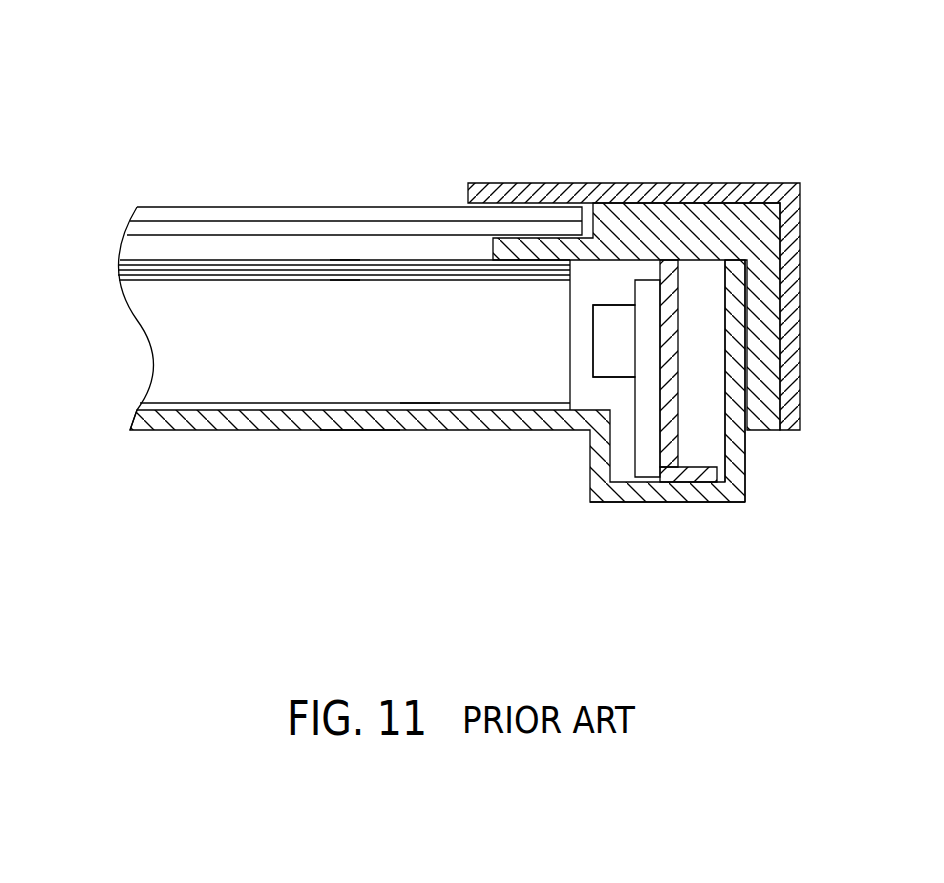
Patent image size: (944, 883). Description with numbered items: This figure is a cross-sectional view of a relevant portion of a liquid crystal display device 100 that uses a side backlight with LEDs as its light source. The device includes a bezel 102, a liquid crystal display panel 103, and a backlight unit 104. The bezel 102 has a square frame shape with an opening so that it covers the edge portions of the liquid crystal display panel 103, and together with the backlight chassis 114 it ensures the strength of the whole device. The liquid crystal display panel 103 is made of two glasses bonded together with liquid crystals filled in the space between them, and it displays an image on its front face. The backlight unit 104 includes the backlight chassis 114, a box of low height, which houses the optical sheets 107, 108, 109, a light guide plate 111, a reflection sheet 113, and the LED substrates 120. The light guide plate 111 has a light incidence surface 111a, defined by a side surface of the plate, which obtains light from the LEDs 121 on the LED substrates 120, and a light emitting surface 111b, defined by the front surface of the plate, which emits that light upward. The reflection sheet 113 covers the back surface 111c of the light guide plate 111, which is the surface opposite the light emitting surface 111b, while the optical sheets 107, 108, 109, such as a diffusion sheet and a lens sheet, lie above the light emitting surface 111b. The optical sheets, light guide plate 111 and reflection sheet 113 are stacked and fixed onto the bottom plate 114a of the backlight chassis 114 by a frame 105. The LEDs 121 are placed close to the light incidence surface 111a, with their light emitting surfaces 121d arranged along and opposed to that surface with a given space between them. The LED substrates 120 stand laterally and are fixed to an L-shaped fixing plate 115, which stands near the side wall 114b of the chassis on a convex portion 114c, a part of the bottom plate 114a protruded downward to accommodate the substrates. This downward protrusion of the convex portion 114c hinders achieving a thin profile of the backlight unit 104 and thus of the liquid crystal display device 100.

The liquid crystal display device 100 is at (143, 92).
The bezel 102 is at (647, 192).
The liquid crystal display panel 103 is at (290, 207).
The backlight unit 104 is at (331, 451).
The frame 105 is at (740, 233).
The optical sheet 107 is at (148, 265).
The optical sheet 108 is at (133, 268).
The optical sheet 109 is at (132, 277).
The light guide plate 111 is at (163, 350).
The light incidence surface 111a is at (582, 340).
The light emitting surface 111b is at (340, 280).
The back surface 111c is at (427, 403).
The reflection sheet 113 is at (158, 408).
The backlight chassis 114 is at (222, 432).
The bottom plate 114a is at (375, 420).
The side wall 114b is at (738, 297).
The convex portion 114c is at (660, 488).
The fixing plate 115 is at (687, 473).
The LED substrate 120 is at (632, 437).
The LED 121 is at (612, 377).
The light emitting surface of LED 121d is at (595, 363).